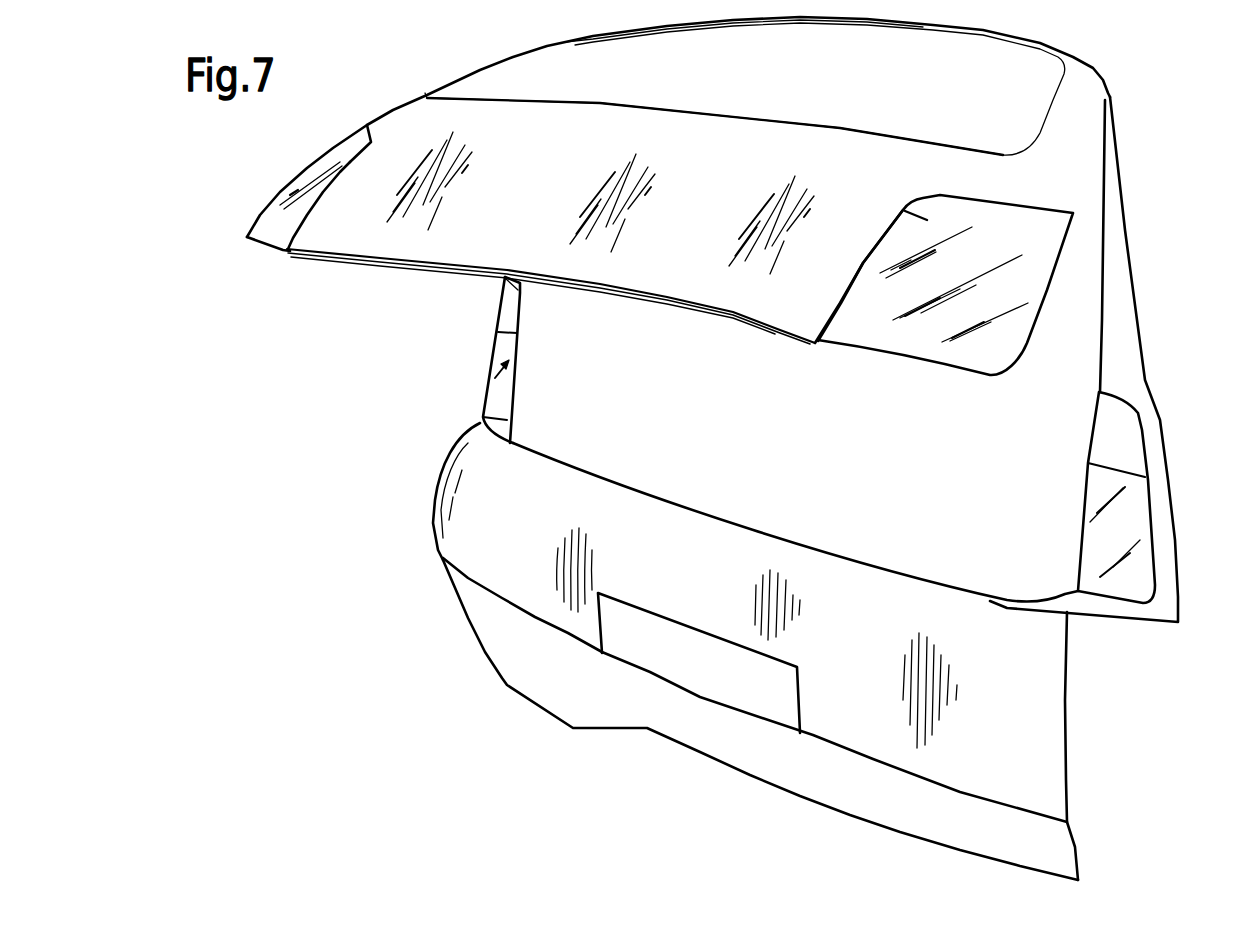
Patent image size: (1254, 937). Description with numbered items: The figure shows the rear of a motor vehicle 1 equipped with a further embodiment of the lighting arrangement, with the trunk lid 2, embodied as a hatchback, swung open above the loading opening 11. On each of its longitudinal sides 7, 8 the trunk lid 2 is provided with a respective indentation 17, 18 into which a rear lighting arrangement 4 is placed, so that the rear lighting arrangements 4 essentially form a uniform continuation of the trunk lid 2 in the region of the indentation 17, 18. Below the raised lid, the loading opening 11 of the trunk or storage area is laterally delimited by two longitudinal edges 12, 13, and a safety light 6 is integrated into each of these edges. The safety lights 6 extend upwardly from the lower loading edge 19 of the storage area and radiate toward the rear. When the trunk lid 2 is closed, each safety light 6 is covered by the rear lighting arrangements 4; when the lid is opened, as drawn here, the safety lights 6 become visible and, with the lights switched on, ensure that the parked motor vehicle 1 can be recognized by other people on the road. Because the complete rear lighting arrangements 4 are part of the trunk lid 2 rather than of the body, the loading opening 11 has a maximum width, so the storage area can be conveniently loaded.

The motor vehicle 1 is at (1097, 66).
The trunk lid 2 is at (440, 203).
The rear lighting arrangement 4 is at (280, 207).
The safety light 6 is at (500, 382).
The longitudinal side 7 is at (863, 265).
The longitudinal side 8 is at (388, 110).
The loading opening 11 is at (573, 415).
The longitudinal edge 12 is at (518, 283).
The longitudinal edge 13 is at (1120, 342).
The indentation 17 is at (927, 220).
The indentation 18 is at (350, 162).
The lower loading edge 19 is at (617, 490).